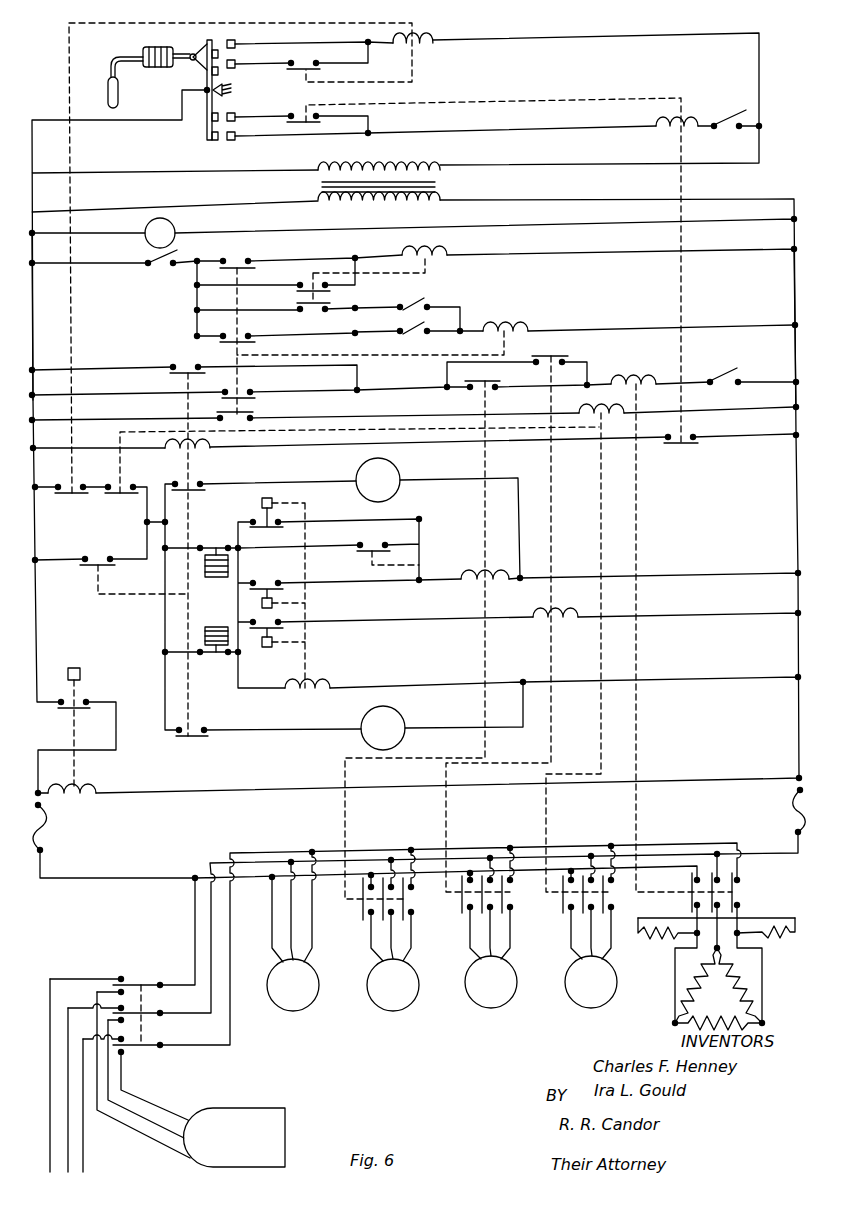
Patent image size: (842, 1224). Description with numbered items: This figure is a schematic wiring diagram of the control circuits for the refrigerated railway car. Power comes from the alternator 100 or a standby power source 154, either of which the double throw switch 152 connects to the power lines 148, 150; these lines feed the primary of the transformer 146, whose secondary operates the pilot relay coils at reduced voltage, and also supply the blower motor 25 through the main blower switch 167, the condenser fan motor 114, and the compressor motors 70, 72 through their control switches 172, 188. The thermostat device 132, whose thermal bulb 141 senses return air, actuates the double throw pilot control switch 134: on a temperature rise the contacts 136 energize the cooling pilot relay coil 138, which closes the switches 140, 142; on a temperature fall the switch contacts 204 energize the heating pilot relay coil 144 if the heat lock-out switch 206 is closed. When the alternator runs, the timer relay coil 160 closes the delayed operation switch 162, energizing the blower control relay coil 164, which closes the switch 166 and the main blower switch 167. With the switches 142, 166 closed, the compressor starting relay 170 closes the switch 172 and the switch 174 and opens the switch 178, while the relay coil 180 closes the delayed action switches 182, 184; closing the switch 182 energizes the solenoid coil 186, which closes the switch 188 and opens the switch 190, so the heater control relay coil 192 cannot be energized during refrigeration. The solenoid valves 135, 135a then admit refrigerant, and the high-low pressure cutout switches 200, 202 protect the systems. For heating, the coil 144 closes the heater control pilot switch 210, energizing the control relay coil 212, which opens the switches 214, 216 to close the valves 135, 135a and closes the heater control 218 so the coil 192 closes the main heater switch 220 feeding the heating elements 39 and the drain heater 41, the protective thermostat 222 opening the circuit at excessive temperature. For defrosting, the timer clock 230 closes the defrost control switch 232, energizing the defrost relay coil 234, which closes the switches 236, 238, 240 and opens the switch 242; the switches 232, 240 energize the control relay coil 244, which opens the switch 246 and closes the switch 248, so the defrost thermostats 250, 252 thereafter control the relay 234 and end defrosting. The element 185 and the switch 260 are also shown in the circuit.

The motor 25 is at (586, 993).
The electric strip heating elements 39 is at (698, 990).
The electric heating means 41 is at (664, 935).
The motor-compressor unit 70 is at (393, 998).
The motor-compressor unit 72 is at (489, 995).
The alternator 100 is at (245, 1115).
The motor 114 is at (302, 997).
The thermostat device 132 is at (126, 66).
The double throw pilot control switch 134 is at (206, 106).
The solenoid operated control valve 135 is at (401, 489).
The solenoid operated refrigerant control valve 135a is at (363, 736).
The contacts 136 is at (235, 63).
The cooling pilot relay coil 138 is at (426, 52).
The switch 140 is at (302, 70).
The thermal bulb 141 is at (106, 99).
The cooling pilot relay switch 142 is at (78, 497).
The heating pilot relay coil 144 is at (658, 125).
The transformer 146 is at (320, 182).
The power line 148 is at (33, 325).
The power line 150 is at (794, 295).
The double throw switch 152 is at (150, 1050).
The standby power source 154 is at (85, 1155).
The main control circuit timer relay coil 160 is at (78, 800).
The delayed operation switch 162 is at (78, 700).
The blower control relay coil 164 is at (598, 418).
The switch 166 is at (130, 497).
The main blower switch 167 is at (563, 903).
The compressor motor starting relay 170 is at (463, 582).
The control switch 172 is at (362, 907).
The switch 174 is at (370, 546).
The switch 178 is at (494, 388).
The relay coil 180 is at (307, 687).
The delayed action switch 182 is at (264, 627).
The delayed action switch 184 is at (282, 568).
The switch 185 is at (278, 519).
The solenoid coil 186 is at (557, 622).
The compressor control switch 188 is at (465, 903).
The switch 190 is at (555, 358).
The heater control relay coil 192 is at (634, 385).
The high-low pressure cutout switch 200 is at (215, 553).
The high-low pressure cutout switch 202 is at (228, 607).
The switch contacts 204 is at (235, 137).
The heat lock-out switch 206 is at (722, 118).
The heater control pilot switch 210 is at (691, 443).
The control relay coil 212 is at (208, 452).
The switch 214 is at (199, 482).
The switch 216 is at (203, 728).
The heater control 218 is at (187, 363).
The main heater switch 220 is at (737, 892).
The protective thermostat 222 is at (723, 381).
The defrosting timer clock 230 is at (167, 218).
The defrost control switch 232 is at (166, 266).
The defrost control relay coil 234 is at (507, 328).
The switch 236 is at (251, 391).
The switch 238 is at (251, 334).
The switch 240 is at (235, 262).
The switch 242 is at (251, 416).
The control relay coil 244 is at (441, 257).
The switch 246 is at (327, 304).
The switch 248 is at (313, 283).
The defrost thermostat 250 is at (429, 303).
The defrost thermostat 252 is at (430, 328).
The switch 260 is at (92, 568).